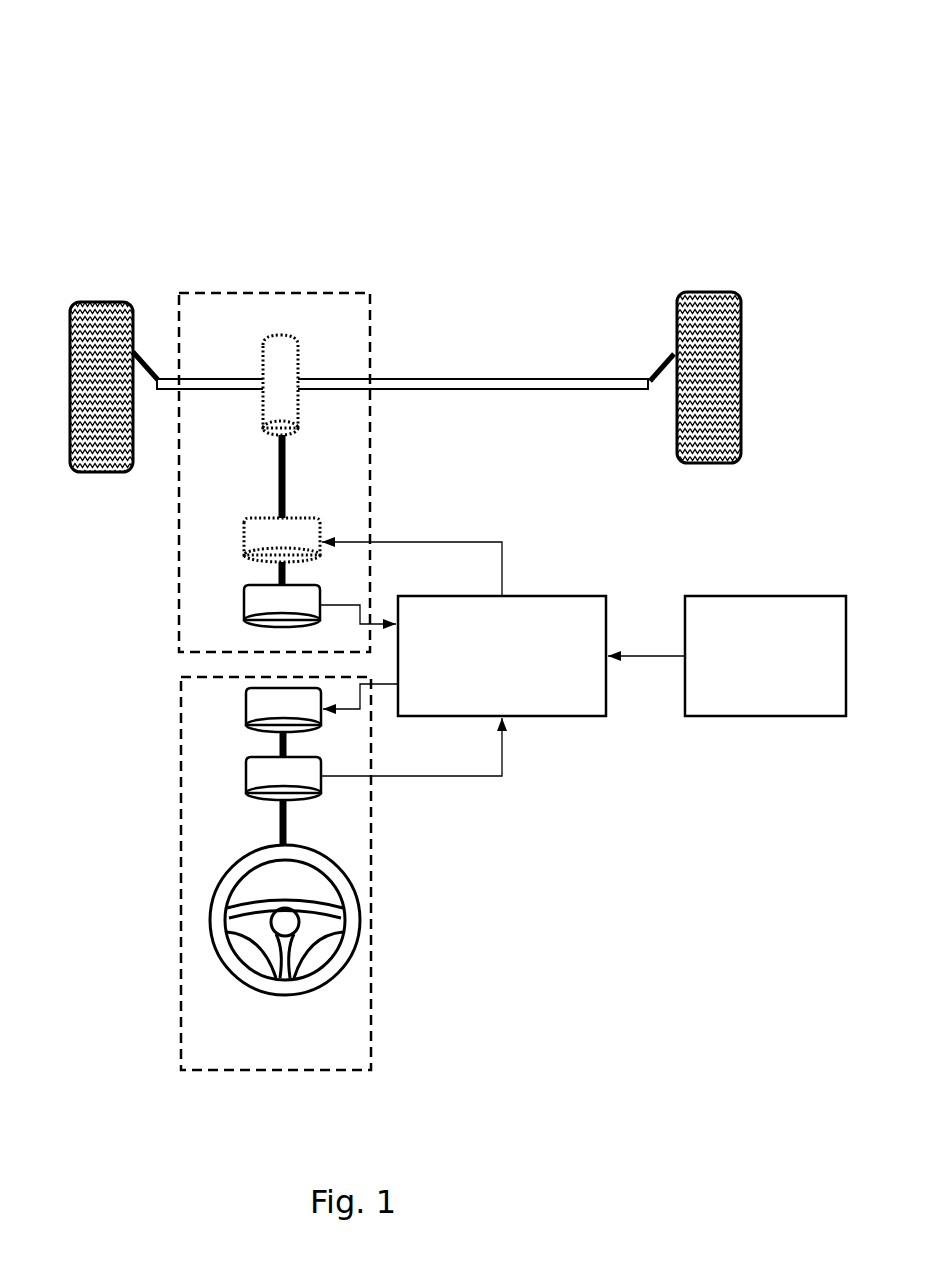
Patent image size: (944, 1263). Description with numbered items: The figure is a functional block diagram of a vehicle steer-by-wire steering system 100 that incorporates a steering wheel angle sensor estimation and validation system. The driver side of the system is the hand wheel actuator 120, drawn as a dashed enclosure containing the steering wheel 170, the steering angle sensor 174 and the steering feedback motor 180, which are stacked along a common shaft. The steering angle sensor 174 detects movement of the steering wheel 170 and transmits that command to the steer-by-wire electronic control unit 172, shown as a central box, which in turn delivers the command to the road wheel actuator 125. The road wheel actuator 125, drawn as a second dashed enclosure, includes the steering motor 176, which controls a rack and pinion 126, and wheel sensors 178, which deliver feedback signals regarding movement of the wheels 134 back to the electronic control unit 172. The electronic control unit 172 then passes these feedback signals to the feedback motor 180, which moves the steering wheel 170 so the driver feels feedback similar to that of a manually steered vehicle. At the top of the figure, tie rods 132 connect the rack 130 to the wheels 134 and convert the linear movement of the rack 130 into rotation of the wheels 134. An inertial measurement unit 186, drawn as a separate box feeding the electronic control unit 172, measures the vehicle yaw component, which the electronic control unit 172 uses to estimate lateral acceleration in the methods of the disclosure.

The steer-by-wire steering system 100 is at (367, 14).
The hand wheel actuator 120 is at (276, 873).
The road wheel actuator 125 is at (274, 472).
The rack and pinion 126 is at (305, 358).
The rack 130 is at (488, 400).
The tie rods 132 is at (651, 357).
The wheels 134 is at (119, 283).
The steering wheel 170 is at (362, 920).
The electronic control unit 172 is at (463, 659).
The steering angle sensor 174 is at (242, 769).
The steering motor 176 is at (238, 541).
The wheel sensors 178 is at (240, 607).
The steering feedback motor 180 is at (242, 699).
The inertial measurement unit 186 is at (727, 656).